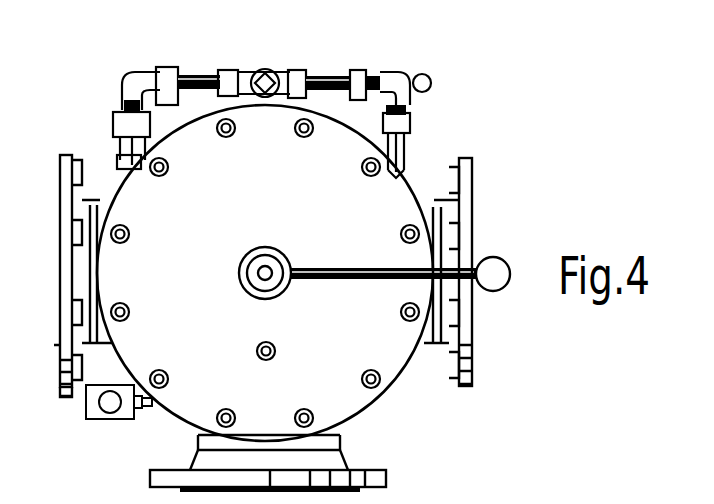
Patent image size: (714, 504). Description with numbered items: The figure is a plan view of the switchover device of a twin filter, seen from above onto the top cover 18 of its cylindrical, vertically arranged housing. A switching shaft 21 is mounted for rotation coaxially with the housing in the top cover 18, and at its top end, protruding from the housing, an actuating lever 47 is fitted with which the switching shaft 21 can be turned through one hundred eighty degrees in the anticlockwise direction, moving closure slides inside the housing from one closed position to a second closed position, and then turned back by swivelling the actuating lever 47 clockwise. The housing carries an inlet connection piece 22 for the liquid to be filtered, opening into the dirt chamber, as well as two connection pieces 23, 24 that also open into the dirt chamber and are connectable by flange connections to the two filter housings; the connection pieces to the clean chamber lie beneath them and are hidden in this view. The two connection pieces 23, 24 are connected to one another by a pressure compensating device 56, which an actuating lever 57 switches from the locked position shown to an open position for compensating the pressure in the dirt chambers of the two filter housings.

The top cover 18 is at (188, 306).
The switching shaft 21 is at (250, 256).
The inlet connection piece 22 is at (352, 458).
The connection piece 23 is at (95, 195).
The connection piece 24 is at (430, 198).
The actuating lever 47 is at (362, 282).
The pressure compensating device 56 is at (283, 62).
The actuating lever 57 is at (392, 78).